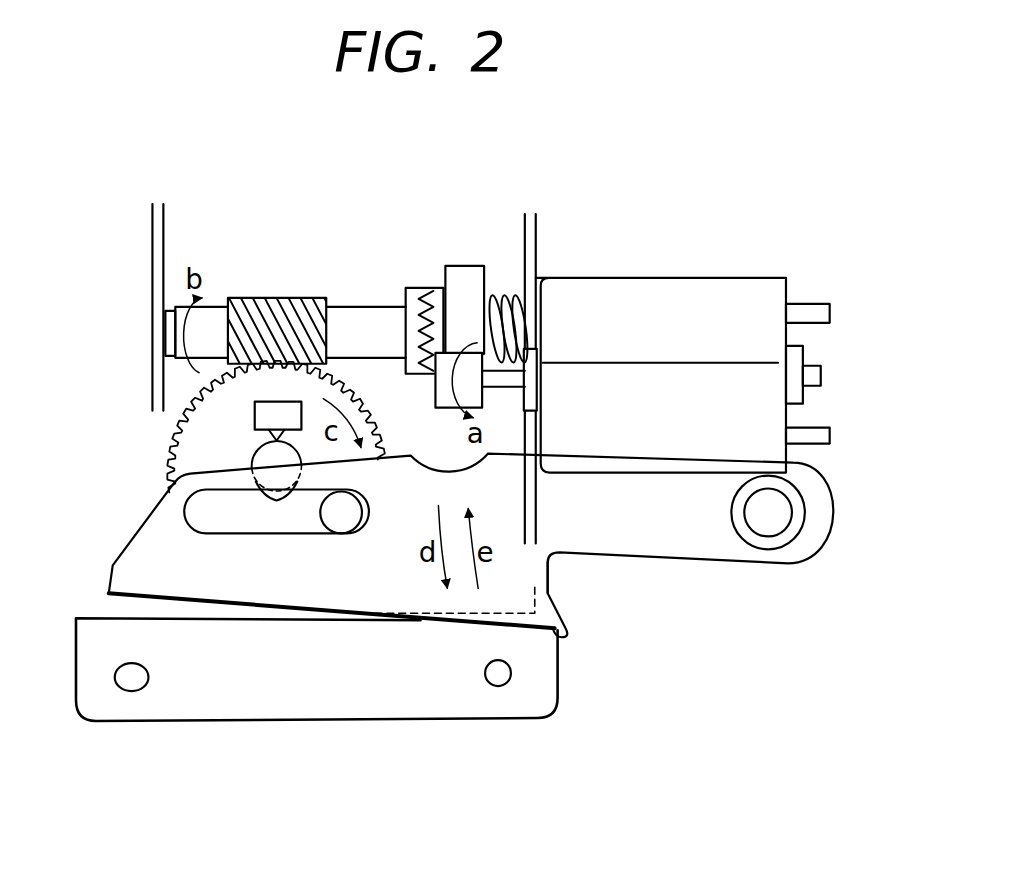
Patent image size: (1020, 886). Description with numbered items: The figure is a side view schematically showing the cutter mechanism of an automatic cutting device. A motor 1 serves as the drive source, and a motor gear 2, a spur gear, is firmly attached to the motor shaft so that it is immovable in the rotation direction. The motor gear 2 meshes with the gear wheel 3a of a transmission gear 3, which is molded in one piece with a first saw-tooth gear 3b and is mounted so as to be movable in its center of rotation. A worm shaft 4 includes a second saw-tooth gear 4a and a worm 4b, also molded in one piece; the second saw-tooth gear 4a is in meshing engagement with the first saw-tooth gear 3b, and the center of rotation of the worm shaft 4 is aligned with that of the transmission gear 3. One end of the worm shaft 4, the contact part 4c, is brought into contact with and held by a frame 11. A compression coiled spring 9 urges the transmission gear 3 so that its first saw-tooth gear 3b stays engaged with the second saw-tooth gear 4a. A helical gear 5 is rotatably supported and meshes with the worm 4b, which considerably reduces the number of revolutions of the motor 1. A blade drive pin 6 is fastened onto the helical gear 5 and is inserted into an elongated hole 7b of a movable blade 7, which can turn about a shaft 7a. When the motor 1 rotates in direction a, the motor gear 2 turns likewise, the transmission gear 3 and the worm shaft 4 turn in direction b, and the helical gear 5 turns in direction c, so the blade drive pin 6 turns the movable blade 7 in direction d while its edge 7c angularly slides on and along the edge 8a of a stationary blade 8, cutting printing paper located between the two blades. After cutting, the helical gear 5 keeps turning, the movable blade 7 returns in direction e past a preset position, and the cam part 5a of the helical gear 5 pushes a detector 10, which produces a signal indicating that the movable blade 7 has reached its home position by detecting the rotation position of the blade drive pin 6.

The motor 1 is at (708, 285).
The motor gear 2 is at (482, 400).
The transmission gear 3 is at (477, 277).
The gear wheel 3a is at (462, 272).
The first saw-tooth gear 3b is at (435, 283).
The worm shaft 4 is at (347, 308).
The second saw-tooth gear 4a is at (413, 288).
The worm 4b is at (262, 297).
The contact part 4c is at (163, 322).
The helical gear 5 is at (203, 452).
The cam part 5a is at (283, 500).
The blade drive pin 6 is at (348, 514).
The movable blade 7 is at (463, 623).
The shaft 7a is at (778, 508).
The elongated hole 7b is at (237, 523).
The edge 7c is at (362, 615).
The stationary blade 8 is at (232, 703).
The edge 8a is at (163, 618).
The compression coiled spring 9 is at (527, 295).
The detector 10 is at (253, 415).
The frame 11 is at (150, 297).